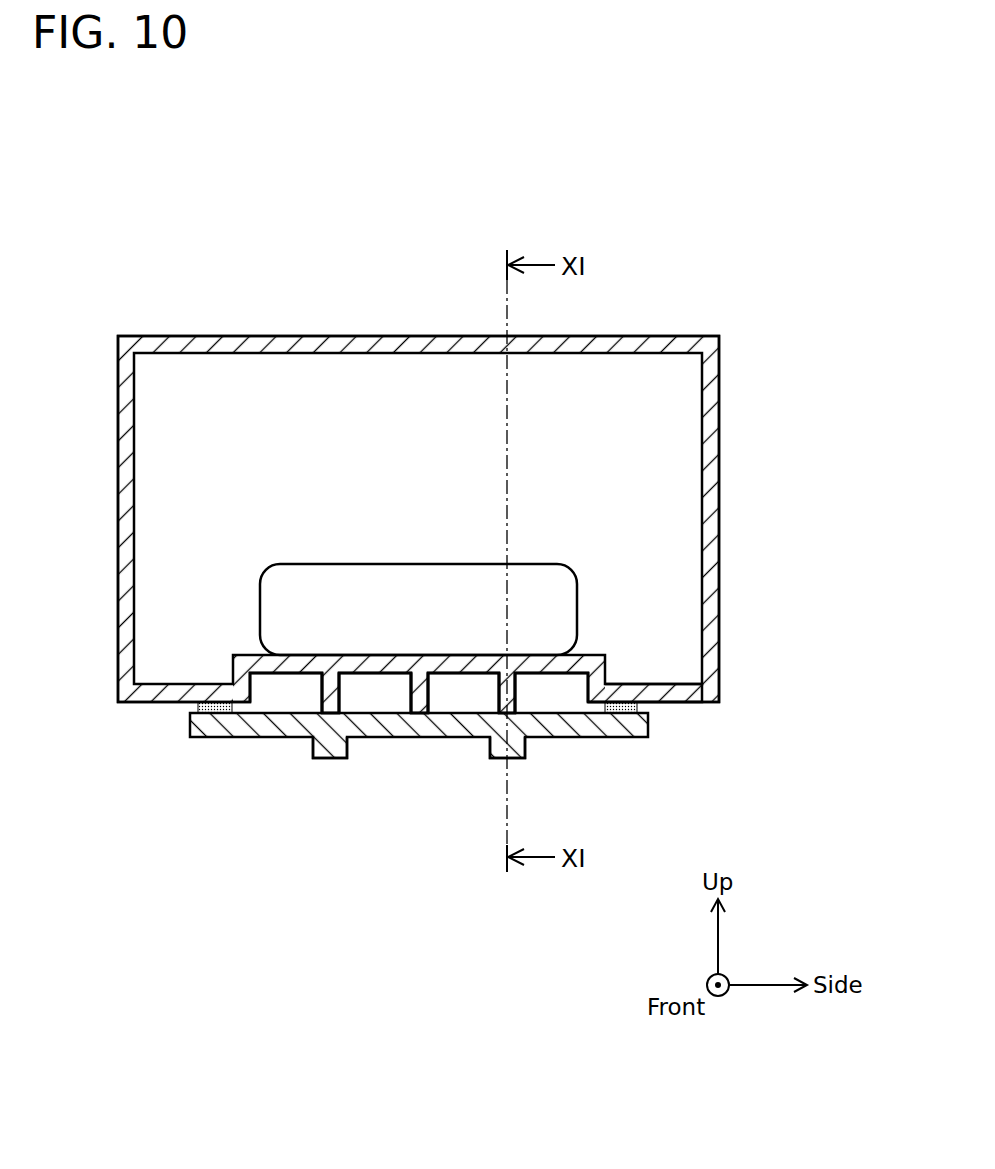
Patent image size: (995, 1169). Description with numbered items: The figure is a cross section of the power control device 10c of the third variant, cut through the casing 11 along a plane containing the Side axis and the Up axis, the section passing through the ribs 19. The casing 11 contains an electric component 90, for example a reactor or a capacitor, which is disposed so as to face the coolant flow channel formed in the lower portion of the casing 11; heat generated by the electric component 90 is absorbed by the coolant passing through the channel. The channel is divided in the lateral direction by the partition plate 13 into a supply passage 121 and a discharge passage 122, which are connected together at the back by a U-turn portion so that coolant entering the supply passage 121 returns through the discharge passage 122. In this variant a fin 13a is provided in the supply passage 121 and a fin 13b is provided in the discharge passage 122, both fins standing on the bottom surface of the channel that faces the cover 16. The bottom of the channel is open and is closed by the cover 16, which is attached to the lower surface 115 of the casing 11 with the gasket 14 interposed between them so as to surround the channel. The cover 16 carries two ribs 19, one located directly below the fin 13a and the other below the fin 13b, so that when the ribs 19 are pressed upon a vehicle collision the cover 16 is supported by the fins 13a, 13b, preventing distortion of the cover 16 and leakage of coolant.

The power control device 10c is at (720, 288).
The casing 11 is at (712, 402).
The partition plate 13 is at (413, 698).
The fin 13a is at (514, 686).
The fin 13b is at (326, 690).
The gasket 14 is at (197, 705).
The cover 16 is at (622, 727).
The rib 19 is at (325, 752).
The electric component 90 is at (553, 578).
The lower surface 115 is at (694, 705).
The supply passage 121 is at (458, 697).
The discharge passage 122 is at (268, 694).